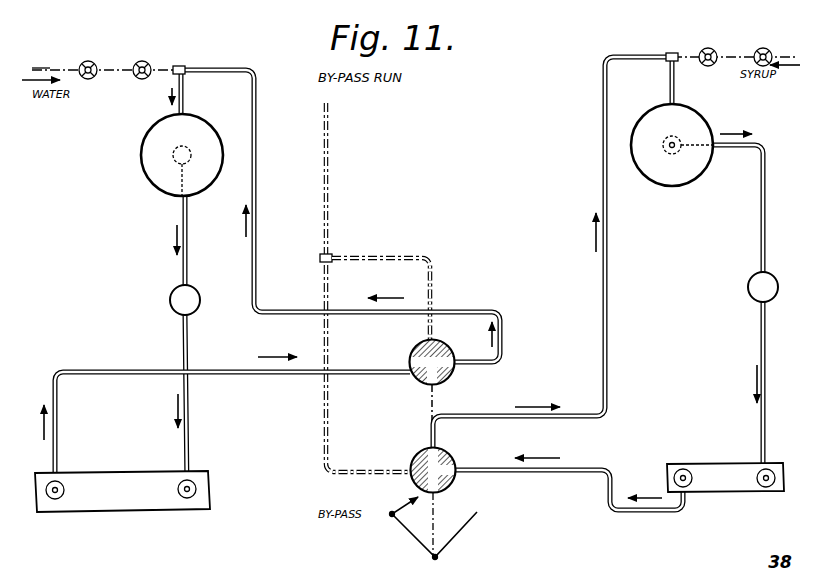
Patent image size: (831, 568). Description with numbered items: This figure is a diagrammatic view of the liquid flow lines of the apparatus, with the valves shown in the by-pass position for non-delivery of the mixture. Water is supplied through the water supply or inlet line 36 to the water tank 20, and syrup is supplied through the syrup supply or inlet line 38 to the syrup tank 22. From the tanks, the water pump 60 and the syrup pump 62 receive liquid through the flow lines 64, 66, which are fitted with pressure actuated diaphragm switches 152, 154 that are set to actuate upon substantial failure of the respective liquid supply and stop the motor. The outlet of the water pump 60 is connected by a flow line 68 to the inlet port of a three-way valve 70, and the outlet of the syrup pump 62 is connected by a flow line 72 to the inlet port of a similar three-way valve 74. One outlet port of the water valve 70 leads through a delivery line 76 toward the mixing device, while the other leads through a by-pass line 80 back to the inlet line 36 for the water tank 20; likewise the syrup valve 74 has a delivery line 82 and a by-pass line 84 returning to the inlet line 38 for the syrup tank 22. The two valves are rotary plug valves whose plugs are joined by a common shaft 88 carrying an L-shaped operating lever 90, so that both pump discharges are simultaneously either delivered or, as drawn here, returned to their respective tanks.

The water supply or inlet line 36 is at (58, 68).
The syrup supply or inlet line 38 is at (787, 53).
The water tank 20 is at (141, 150).
The syrup tank 22 is at (688, 188).
The pressure actuated diaphragm switch 152 is at (170, 295).
The pressure actuated diaphragm switch 154 is at (748, 283).
The flow line 64 is at (182, 343).
The flow line 66 is at (760, 348).
The flow line 68 is at (233, 372).
The water pump 60 is at (111, 472).
The syrup pump 62 is at (712, 462).
The by-pass line 80 is at (258, 207).
The delivery line 82 is at (324, 405).
The by-pass line 84 is at (608, 331).
The delivery line 76 is at (436, 276).
The three-way valve 70 is at (454, 372).
The three-way valve 74 is at (418, 452).
The common shaft 88 is at (428, 398).
The flow line 72 is at (584, 472).
The L-shaped operating lever 90 is at (410, 530).